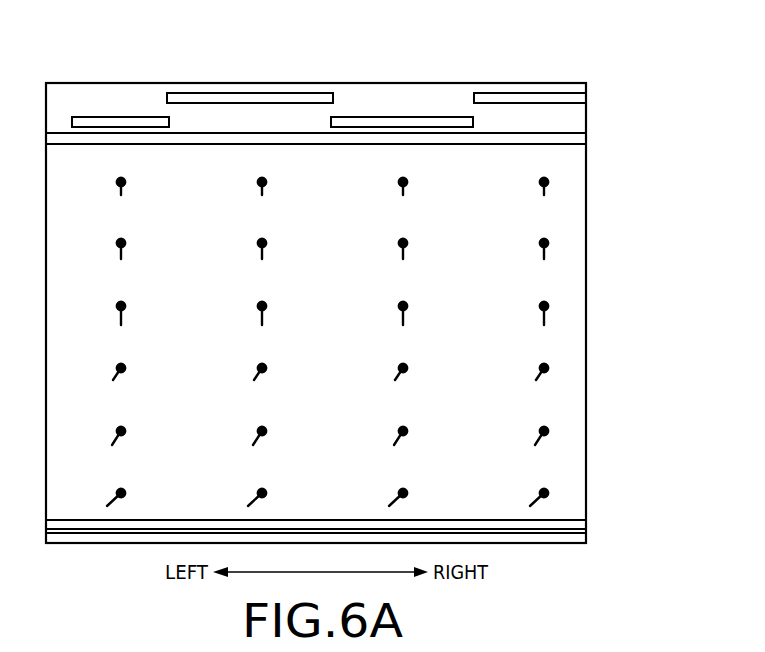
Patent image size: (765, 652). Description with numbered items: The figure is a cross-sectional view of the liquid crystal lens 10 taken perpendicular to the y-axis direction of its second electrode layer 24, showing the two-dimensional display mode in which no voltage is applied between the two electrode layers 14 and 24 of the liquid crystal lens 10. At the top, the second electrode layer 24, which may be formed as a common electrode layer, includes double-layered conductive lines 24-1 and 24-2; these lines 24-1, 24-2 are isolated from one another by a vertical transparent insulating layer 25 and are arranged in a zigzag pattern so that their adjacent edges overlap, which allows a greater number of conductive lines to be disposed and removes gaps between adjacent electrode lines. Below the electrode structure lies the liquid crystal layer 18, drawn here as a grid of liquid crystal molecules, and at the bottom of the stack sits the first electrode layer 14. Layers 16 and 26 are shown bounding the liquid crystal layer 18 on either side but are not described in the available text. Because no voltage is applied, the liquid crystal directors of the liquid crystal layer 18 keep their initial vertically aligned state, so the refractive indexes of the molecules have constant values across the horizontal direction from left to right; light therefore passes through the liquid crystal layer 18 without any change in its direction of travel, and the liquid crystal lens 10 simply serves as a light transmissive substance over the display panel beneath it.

The liquid crystal lens 10 is at (666, 208).
The first electrode layer 14 is at (580, 538).
The first alignment layer 16 is at (577, 524).
The liquid crystal layer 18 is at (573, 285).
The second electrode layer 24 is at (364, 74).
The conductive line 24-1 is at (120, 117).
The conductive line 24-2 is at (247, 93).
The vertical transparent insulating layer 25 is at (548, 120).
The second alignment layer 26 is at (580, 138).